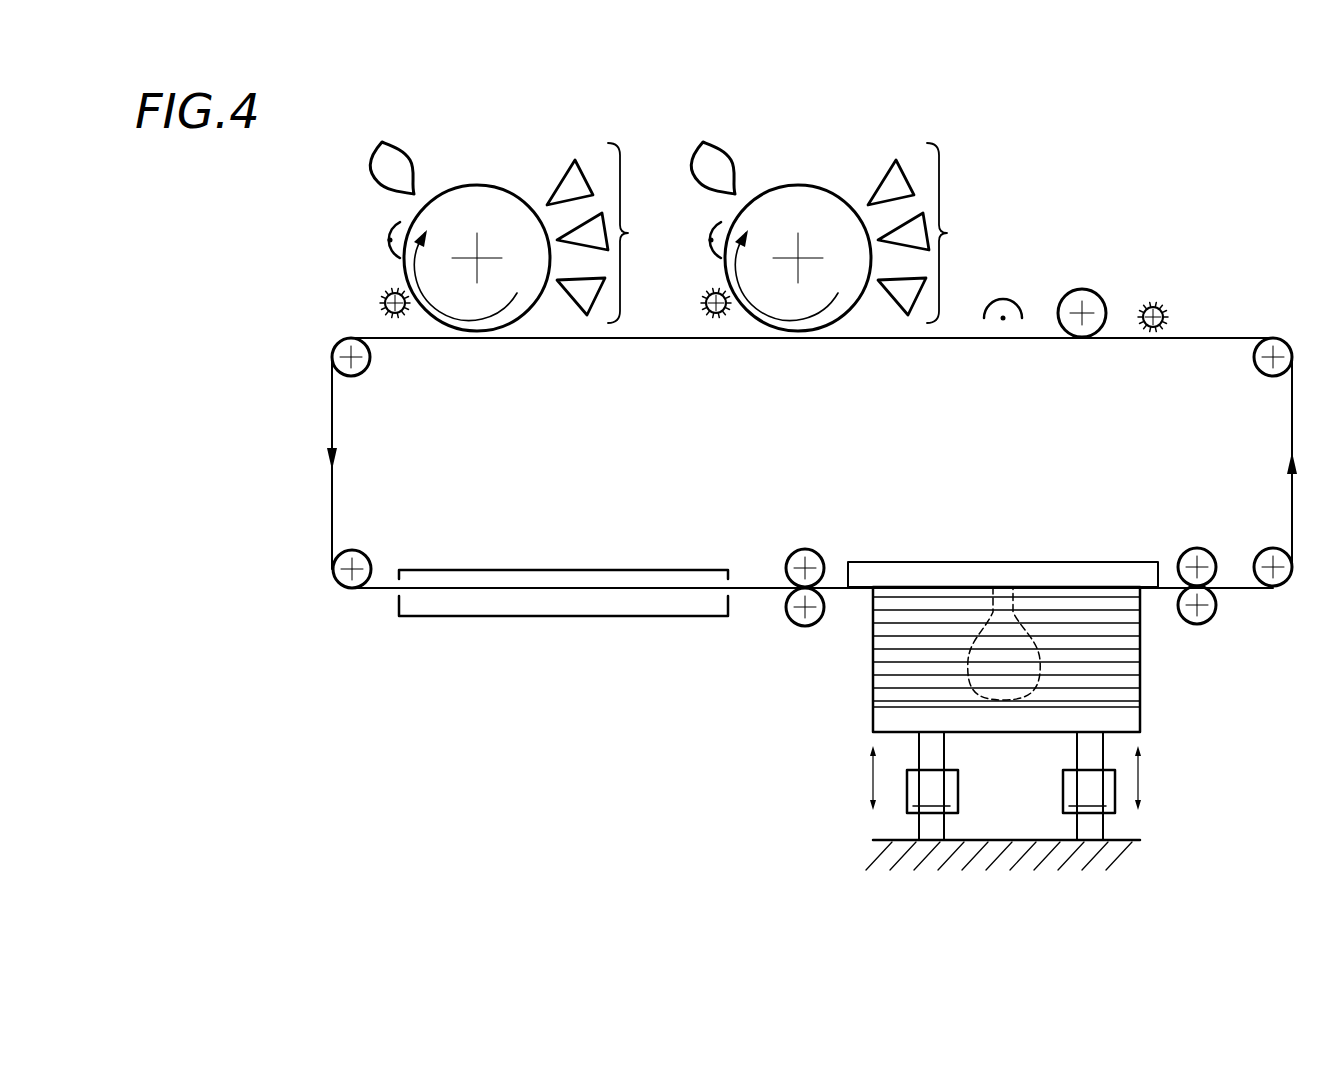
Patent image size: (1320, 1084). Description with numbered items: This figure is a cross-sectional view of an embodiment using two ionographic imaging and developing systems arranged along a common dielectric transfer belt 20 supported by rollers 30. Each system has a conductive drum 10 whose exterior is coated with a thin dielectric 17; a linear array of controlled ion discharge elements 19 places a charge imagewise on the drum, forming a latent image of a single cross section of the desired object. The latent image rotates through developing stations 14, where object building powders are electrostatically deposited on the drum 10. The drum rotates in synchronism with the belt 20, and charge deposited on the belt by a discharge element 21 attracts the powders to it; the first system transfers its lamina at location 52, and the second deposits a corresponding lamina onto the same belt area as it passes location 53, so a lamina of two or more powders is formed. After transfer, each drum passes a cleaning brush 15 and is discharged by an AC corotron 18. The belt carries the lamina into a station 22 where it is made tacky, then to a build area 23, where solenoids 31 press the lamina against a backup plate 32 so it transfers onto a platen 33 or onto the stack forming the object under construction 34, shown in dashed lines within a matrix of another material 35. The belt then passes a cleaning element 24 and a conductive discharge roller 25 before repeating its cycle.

The conductive drum 10 is at (468, 209).
The developing stations 14 is at (764, 233).
The cleaning brush 15 is at (381, 305).
The thin dielectric 17 is at (490, 186).
The AC corotron 18 is at (372, 242).
The controlled ion discharge elements 19 is at (382, 143).
The dielectric transfer belt 20 is at (1233, 338).
The discharge element 21 is at (1008, 301).
The station 22 is at (562, 568).
The build area 23 is at (980, 527).
The cleaning element 24 is at (1160, 303).
The conductive discharge roller 25 is at (1085, 290).
The rollers 30 is at (370, 360).
The solenoids 31 is at (1011, 791).
The backup plate 32 is at (1080, 562).
The platen 33 is at (871, 723).
The object under construction 34 is at (1017, 640).
The matrix of another material 35 is at (886, 622).
The location 52 is at (794, 365).
The location 53 is at (476, 365).